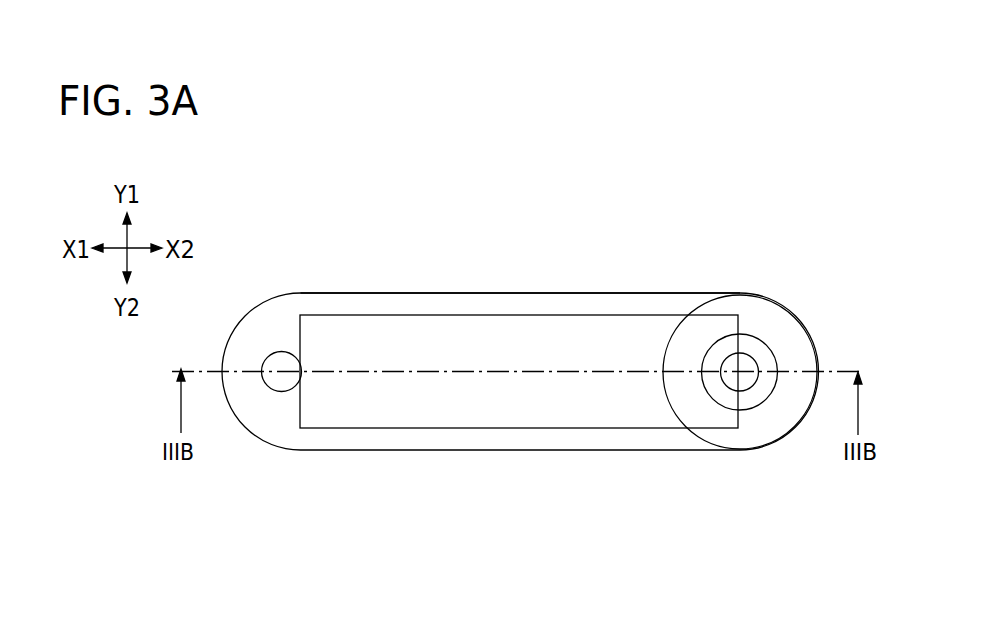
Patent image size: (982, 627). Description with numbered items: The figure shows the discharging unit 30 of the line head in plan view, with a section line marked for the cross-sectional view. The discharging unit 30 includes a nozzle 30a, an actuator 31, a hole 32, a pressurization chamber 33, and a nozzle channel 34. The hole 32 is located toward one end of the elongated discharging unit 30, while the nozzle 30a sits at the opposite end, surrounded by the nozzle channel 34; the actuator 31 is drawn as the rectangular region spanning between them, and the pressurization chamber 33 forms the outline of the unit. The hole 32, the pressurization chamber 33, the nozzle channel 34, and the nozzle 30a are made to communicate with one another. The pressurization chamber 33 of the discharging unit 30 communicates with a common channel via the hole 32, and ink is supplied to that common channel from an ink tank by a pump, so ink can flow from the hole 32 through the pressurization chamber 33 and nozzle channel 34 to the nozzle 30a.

The discharging unit 30 is at (698, 243).
The nozzle 30a is at (758, 362).
The actuator 31 is at (403, 314).
The hole 32 is at (277, 360).
The pressurization chamber 33 is at (578, 293).
The nozzle channel 34 is at (676, 333).